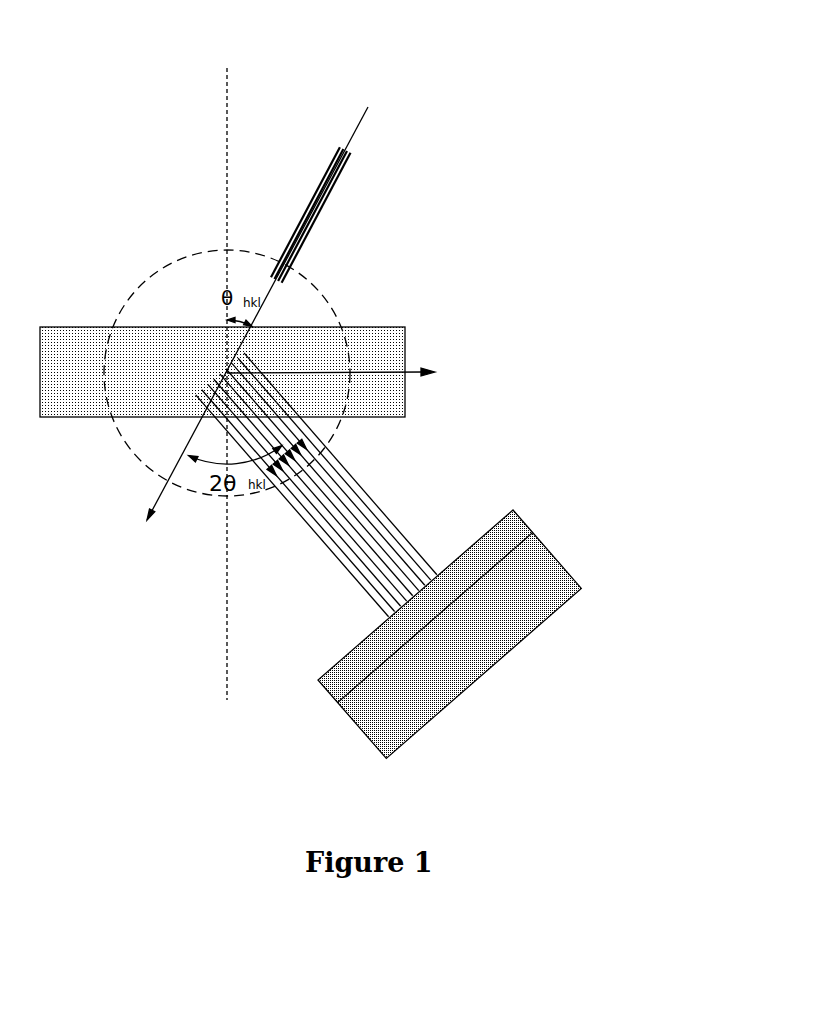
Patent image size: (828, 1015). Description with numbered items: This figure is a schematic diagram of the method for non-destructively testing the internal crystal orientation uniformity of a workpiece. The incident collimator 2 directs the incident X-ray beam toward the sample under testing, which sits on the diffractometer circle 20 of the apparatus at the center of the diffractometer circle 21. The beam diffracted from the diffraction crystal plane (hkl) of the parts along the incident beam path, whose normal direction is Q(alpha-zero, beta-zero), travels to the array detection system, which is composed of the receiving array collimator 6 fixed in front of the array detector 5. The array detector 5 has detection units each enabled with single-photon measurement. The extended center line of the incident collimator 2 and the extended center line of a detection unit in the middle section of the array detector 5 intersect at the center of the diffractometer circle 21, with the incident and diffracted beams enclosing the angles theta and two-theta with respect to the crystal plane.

The incident collimator 2 is at (282, 146).
The diffractometer circle 20 is at (314, 313).
The center of the diffractometer circle 21 is at (222, 315).
The receiving array collimator 6 is at (402, 485).
The array detector 5 is at (510, 603).